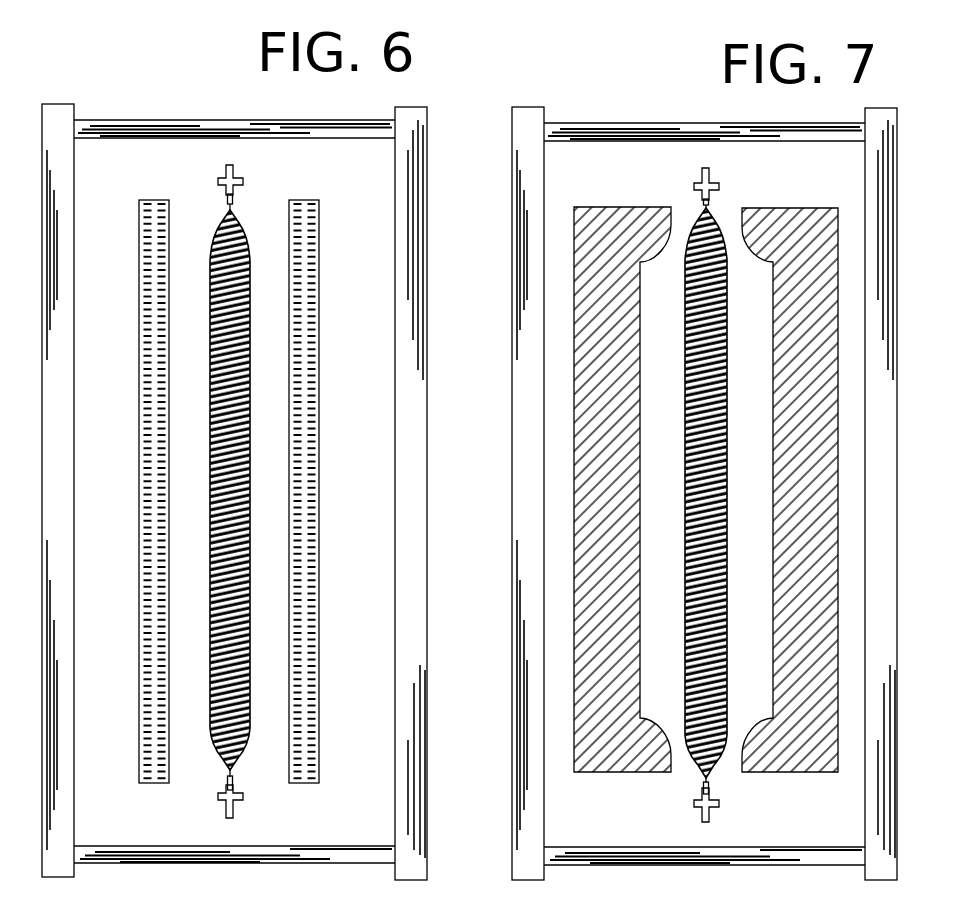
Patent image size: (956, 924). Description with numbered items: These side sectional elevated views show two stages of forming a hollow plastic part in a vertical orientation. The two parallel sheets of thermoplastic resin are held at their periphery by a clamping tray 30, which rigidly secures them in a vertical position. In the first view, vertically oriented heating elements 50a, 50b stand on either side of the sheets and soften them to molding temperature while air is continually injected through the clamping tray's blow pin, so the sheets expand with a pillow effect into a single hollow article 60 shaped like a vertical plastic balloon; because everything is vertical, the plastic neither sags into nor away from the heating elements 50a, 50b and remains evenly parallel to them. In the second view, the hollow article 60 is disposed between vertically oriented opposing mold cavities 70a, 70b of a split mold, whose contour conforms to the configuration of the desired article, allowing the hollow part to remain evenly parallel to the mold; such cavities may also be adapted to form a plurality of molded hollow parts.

In FIG. 6, the clamping tray 30 is at (238, 793).
In FIG. 6, the vertically oriented heating element 50a is at (138, 200).
In FIG. 6, the vertically oriented heating element 50b is at (319, 201).
In FIG. 6, the hollow article 60 is at (247, 233).
In FIG. 7, the hollow article 60 is at (713, 232).
In FIG. 7, the vertically oriented opposing mold cavity 70a is at (637, 207).
In FIG. 7, the vertically oriented opposing mold cavity 70b is at (800, 208).